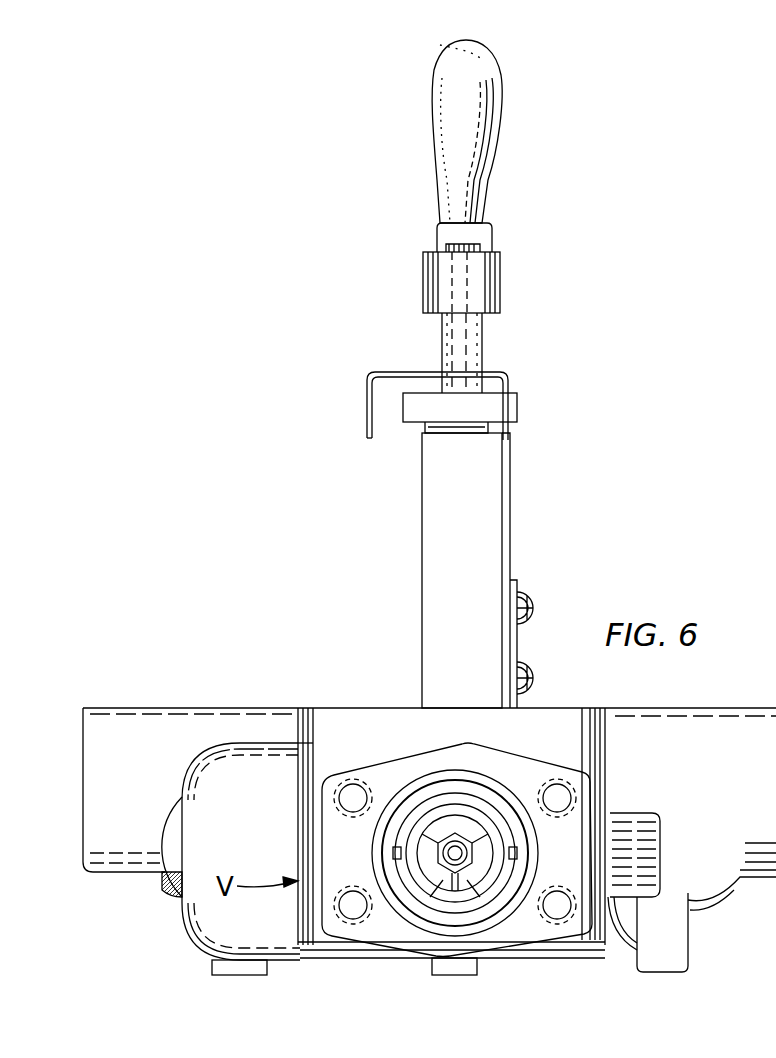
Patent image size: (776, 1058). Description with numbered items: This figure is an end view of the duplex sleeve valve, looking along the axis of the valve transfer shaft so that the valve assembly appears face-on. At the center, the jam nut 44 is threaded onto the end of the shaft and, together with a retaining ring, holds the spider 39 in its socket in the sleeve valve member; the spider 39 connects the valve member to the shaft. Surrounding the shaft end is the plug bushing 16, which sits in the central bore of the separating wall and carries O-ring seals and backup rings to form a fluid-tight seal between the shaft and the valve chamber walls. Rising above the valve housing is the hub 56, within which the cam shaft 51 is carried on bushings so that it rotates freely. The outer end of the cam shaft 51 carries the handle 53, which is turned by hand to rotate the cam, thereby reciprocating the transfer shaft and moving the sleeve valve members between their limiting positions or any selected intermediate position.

The handle 53 is at (489, 160).
The cam shaft 51 is at (482, 346).
The hub 56 is at (430, 574).
The jam nut 44 is at (455, 833).
The plug bushing 16 is at (490, 865).
The spider 39 is at (465, 900).